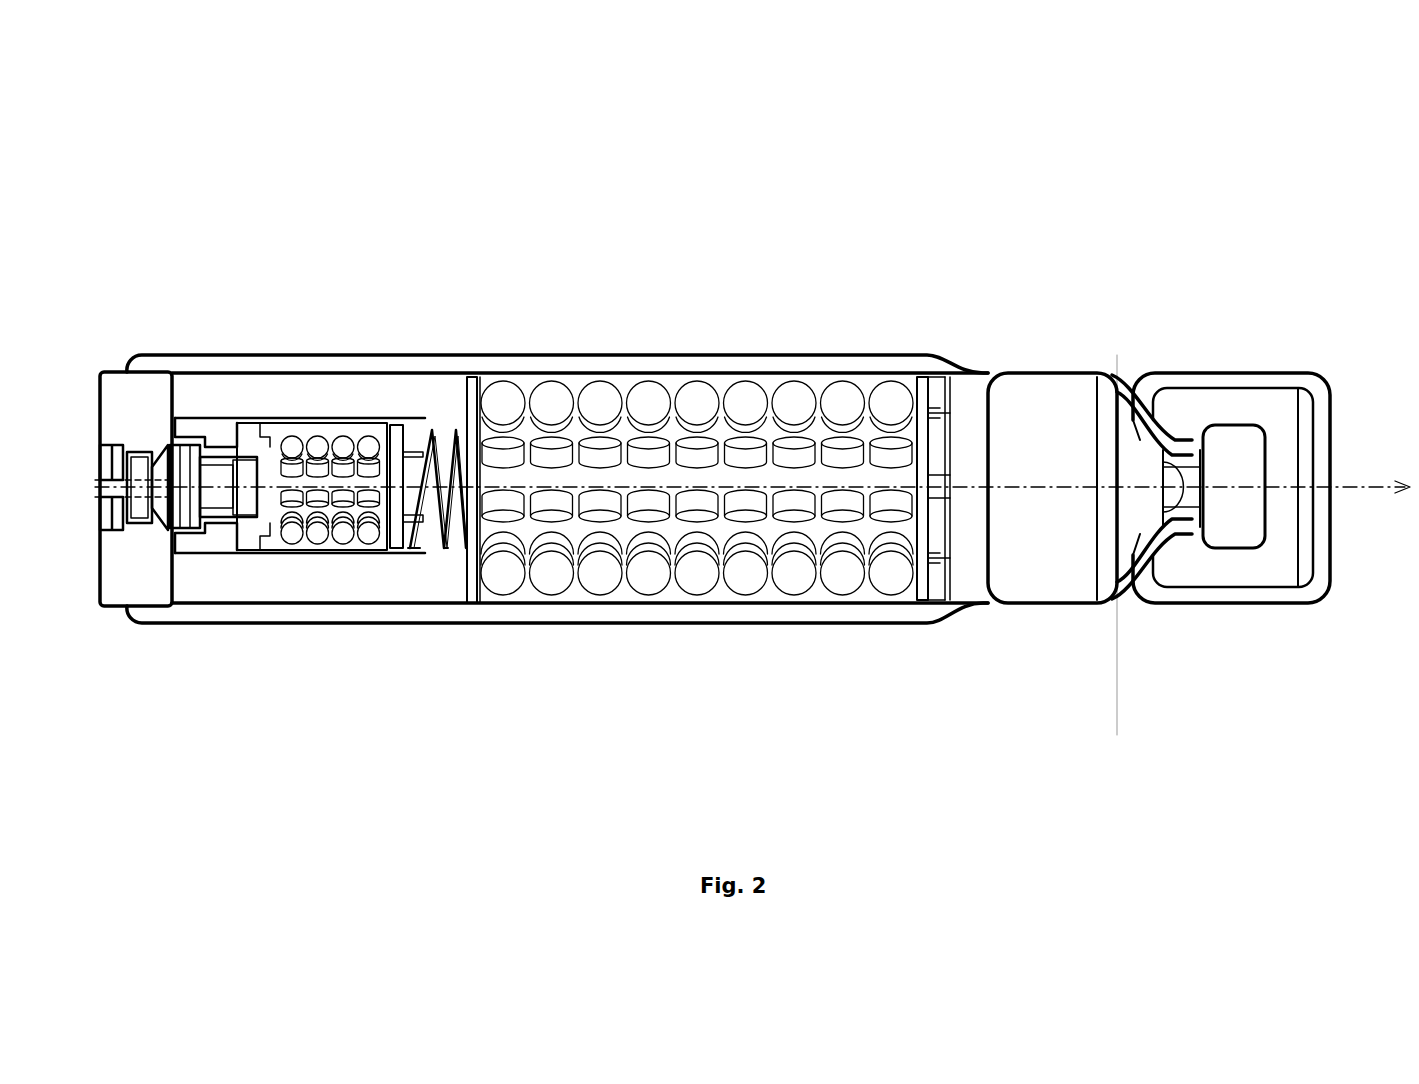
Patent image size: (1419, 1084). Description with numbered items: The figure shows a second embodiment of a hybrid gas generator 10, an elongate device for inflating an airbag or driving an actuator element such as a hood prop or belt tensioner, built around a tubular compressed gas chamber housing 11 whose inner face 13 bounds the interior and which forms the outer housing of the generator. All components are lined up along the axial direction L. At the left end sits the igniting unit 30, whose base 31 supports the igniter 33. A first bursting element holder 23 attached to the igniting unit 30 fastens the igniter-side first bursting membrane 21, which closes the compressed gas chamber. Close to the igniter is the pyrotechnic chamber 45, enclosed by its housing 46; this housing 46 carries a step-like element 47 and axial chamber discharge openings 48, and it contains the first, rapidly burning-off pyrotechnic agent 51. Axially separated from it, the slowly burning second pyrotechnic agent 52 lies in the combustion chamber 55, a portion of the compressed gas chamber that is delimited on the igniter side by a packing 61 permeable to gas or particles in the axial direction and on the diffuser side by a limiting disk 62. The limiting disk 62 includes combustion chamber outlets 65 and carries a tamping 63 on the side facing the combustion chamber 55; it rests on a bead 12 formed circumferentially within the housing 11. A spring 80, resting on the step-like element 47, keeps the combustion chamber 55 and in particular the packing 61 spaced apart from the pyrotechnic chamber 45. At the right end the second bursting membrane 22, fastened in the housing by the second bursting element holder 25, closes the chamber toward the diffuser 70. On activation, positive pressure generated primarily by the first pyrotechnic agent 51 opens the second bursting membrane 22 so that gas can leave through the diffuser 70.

The hybrid gas generator 10 is at (835, 198).
The compressed gas chamber housing 11 is at (732, 358).
The bead 12 is at (958, 355).
The inner face 13 is at (525, 383).
The first bursting membrane 21 is at (272, 555).
The second bursting membrane 22 is at (1182, 537).
The first bursting element holder 23 is at (227, 440).
The second bursting element holder 25 is at (1200, 440).
The igniting unit 30 is at (112, 355).
The base 31 is at (123, 583).
The igniter 33 is at (172, 553).
The pyrotechnic chamber 45 is at (272, 425).
The housing of the pyrotechnic chamber 46 is at (383, 400).
The step-like element 47 is at (425, 560).
The axial chamber discharge openings 48 is at (410, 422).
The first pyrotechnic agent 51 is at (338, 428).
The second pyrotechnic agent 52 is at (550, 587).
The combustion chamber 55 is at (627, 385).
The packing 61 is at (467, 380).
The limiting disk 62 is at (955, 560).
The tamping 63 is at (903, 370).
The combustion chamber outlets 65 is at (955, 412).
The diffuser 70 is at (1258, 382).
The spring 80 is at (437, 553).
The longitudinal axis L is at (1273, 492).